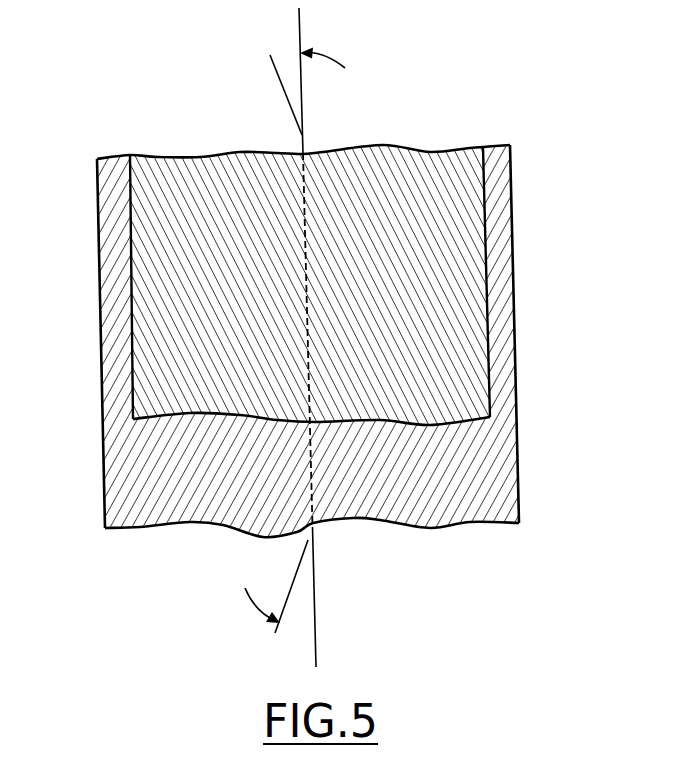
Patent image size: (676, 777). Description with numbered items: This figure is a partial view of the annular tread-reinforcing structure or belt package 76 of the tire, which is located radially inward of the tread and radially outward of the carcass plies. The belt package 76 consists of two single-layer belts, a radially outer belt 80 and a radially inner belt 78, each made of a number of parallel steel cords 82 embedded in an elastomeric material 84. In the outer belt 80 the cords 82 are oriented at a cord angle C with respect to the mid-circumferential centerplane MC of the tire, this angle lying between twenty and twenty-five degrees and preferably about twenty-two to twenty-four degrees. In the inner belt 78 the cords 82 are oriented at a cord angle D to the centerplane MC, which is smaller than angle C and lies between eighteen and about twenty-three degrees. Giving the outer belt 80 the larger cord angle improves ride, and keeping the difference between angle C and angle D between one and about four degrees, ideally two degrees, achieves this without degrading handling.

The belt structure 76 is at (530, 114).
The radially inner belt 78 is at (100, 320).
The radially outer belt 80 is at (488, 190).
The parallel steel cords 82 is at (481, 358).
The elastomeric material 84 is at (468, 244).
The mid-circumferential centerplane MC is at (301, 36).
The cord angle of outer belt C is at (266, 61).
The cord angle of inner belt D is at (320, 633).